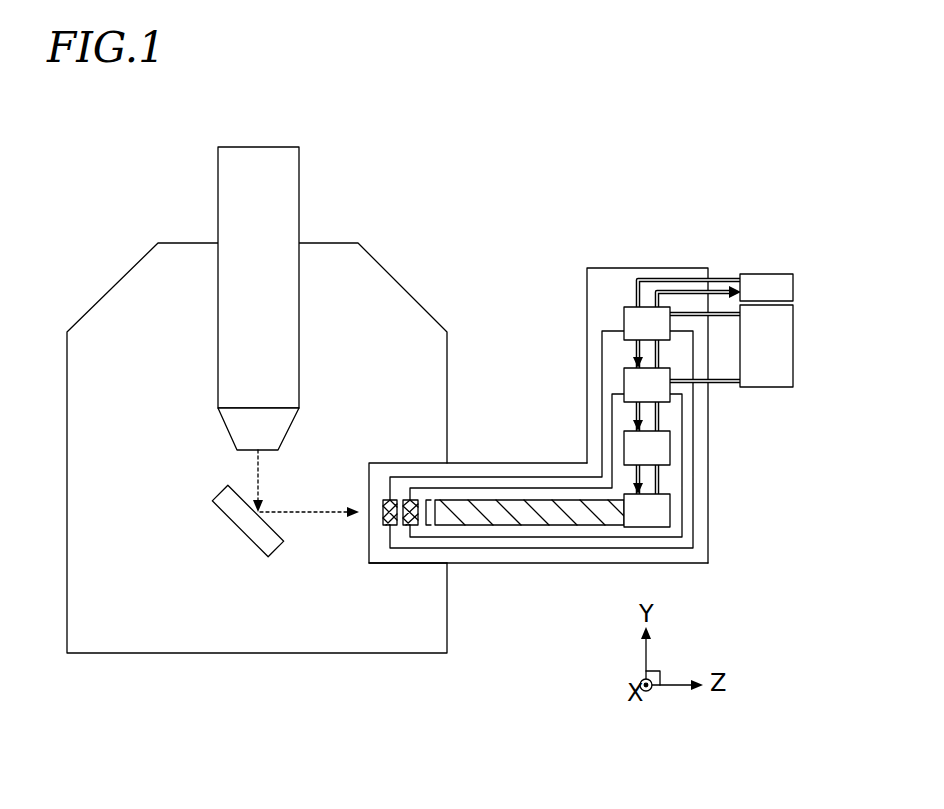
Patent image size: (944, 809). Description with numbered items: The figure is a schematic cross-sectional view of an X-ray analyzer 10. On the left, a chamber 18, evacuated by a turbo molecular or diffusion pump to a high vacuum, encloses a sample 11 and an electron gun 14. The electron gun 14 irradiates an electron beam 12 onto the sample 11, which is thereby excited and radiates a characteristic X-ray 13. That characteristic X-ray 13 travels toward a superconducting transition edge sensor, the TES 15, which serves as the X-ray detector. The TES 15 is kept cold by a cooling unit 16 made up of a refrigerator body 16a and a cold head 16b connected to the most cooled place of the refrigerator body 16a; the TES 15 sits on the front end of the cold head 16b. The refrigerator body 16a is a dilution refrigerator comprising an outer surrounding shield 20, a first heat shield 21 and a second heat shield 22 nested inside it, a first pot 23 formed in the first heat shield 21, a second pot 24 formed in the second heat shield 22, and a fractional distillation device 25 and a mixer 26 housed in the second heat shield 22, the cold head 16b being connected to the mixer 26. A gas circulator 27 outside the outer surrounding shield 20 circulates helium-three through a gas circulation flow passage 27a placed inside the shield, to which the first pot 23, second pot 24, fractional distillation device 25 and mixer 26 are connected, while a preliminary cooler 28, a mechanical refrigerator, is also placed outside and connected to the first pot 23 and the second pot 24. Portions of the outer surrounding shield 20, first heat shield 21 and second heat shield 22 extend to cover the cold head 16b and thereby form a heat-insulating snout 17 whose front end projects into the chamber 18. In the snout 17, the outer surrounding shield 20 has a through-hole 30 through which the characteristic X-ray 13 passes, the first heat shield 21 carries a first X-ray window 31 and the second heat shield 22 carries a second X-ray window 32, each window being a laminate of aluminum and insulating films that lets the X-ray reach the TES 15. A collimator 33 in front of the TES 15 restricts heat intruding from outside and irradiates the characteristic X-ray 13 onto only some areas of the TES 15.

The X-ray analyzer 10 is at (706, 152).
The sample 11 is at (250, 522).
The electron beam 12 is at (256, 468).
The characteristic X-ray 13 is at (312, 516).
The electron gun 14 is at (300, 182).
The superconducting transition edge sensor (TES) 15 is at (438, 501).
The cooling unit 16 is at (598, 206).
The refrigerator body 16a is at (602, 262).
The cold head 16b is at (520, 503).
The snout 17 is at (410, 572).
The chamber 18 is at (68, 583).
The outer surrounding shield 20 is at (655, 268).
The first heat shield 21 is at (602, 333).
The second heat shield 22 is at (612, 395).
The first pot 23 is at (625, 312).
The second pot 24 is at (630, 377).
The fractional distillation device (still) 25 is at (662, 448).
The mixer (mixing chamber) 26 is at (662, 511).
The gas circulator 27 is at (787, 287).
The gas circulation flow passage 27a is at (694, 278).
The preliminary cooler 28 is at (787, 342).
The through-hole 30 is at (366, 492).
The first X-ray window 31 is at (387, 490).
The second X-ray window 32 is at (407, 490).
The collimator 33 is at (434, 498).